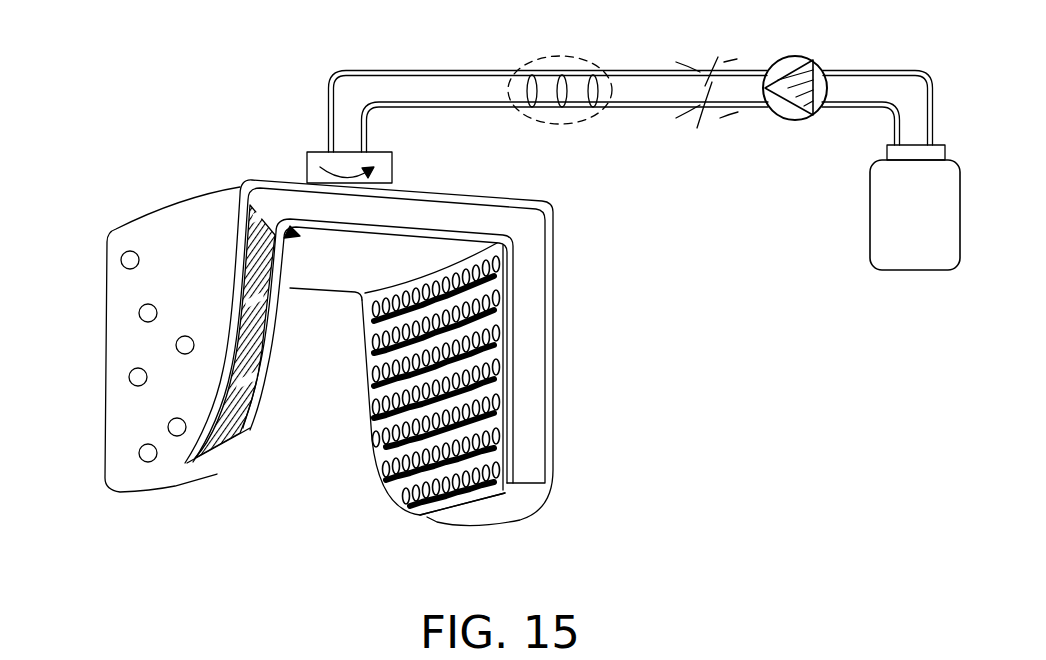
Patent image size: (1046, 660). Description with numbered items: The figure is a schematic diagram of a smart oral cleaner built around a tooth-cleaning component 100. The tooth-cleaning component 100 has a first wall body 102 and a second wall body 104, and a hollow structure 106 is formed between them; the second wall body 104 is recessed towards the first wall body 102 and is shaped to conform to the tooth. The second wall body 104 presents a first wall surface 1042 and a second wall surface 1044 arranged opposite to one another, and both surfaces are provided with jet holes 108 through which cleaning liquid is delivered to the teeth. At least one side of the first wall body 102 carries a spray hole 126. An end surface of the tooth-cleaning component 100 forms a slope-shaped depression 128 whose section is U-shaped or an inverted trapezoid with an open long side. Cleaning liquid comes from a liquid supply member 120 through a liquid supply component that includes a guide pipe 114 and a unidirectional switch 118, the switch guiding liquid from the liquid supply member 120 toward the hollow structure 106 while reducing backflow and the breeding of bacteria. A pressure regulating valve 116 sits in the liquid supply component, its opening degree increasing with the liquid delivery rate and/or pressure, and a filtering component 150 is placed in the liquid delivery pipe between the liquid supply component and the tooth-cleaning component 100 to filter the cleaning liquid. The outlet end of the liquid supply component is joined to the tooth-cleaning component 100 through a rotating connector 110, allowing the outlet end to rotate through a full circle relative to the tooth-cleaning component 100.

The tooth-cleaning component 100 is at (337, 366).
The first wall body 102 is at (547, 447).
The second wall body 104 is at (243, 425).
The hollow structure 106 is at (520, 414).
The jet holes 108 is at (358, 376).
The rotating connector 110 is at (305, 165).
The guide pipe 114 is at (500, 93).
The pressure regulating valve 116 is at (702, 70).
The unidirectional switch 118 is at (823, 72).
The liquid supply member 120 is at (870, 255).
The spray hole 126 is at (142, 446).
The slope-shaped depression 128 is at (305, 382).
The filtering component 150 is at (522, 70).
The first wall surface 1042 is at (232, 457).
The second wall surface 1044 is at (400, 492).